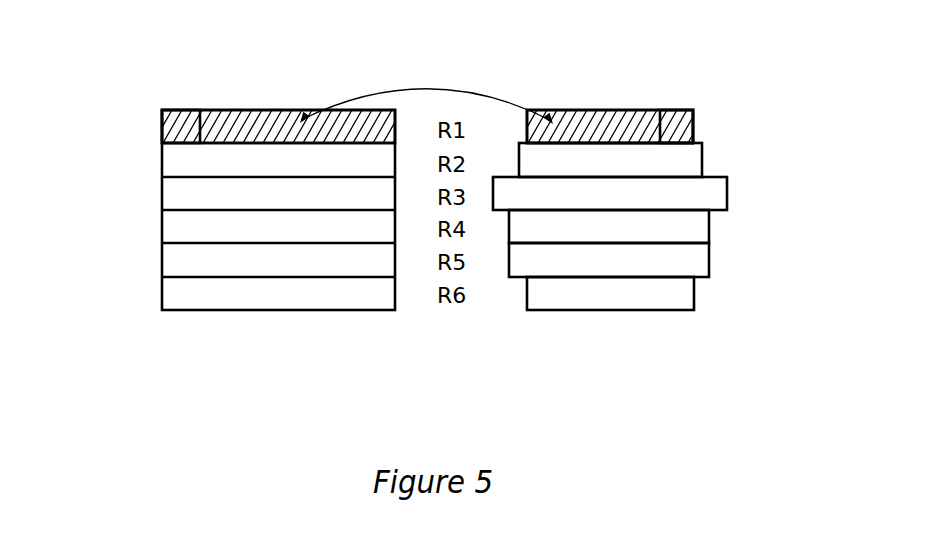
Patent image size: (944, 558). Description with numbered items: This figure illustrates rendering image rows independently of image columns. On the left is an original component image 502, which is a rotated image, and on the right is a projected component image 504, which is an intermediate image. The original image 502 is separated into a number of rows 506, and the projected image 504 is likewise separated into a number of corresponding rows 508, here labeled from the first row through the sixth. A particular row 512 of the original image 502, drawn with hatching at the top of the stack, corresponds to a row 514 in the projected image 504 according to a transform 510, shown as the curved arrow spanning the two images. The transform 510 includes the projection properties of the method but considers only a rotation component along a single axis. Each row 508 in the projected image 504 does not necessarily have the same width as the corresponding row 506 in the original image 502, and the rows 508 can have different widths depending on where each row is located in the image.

The original component image 502 is at (286, 94).
The projected component image 504 is at (655, 95).
The rows of the original image 506 is at (141, 205).
The corresponding rows of the projected image 508 is at (748, 204).
The transform 510 is at (463, 54).
The particular row of the original image 512 is at (162, 116).
The row in the projected image 514 is at (693, 112).